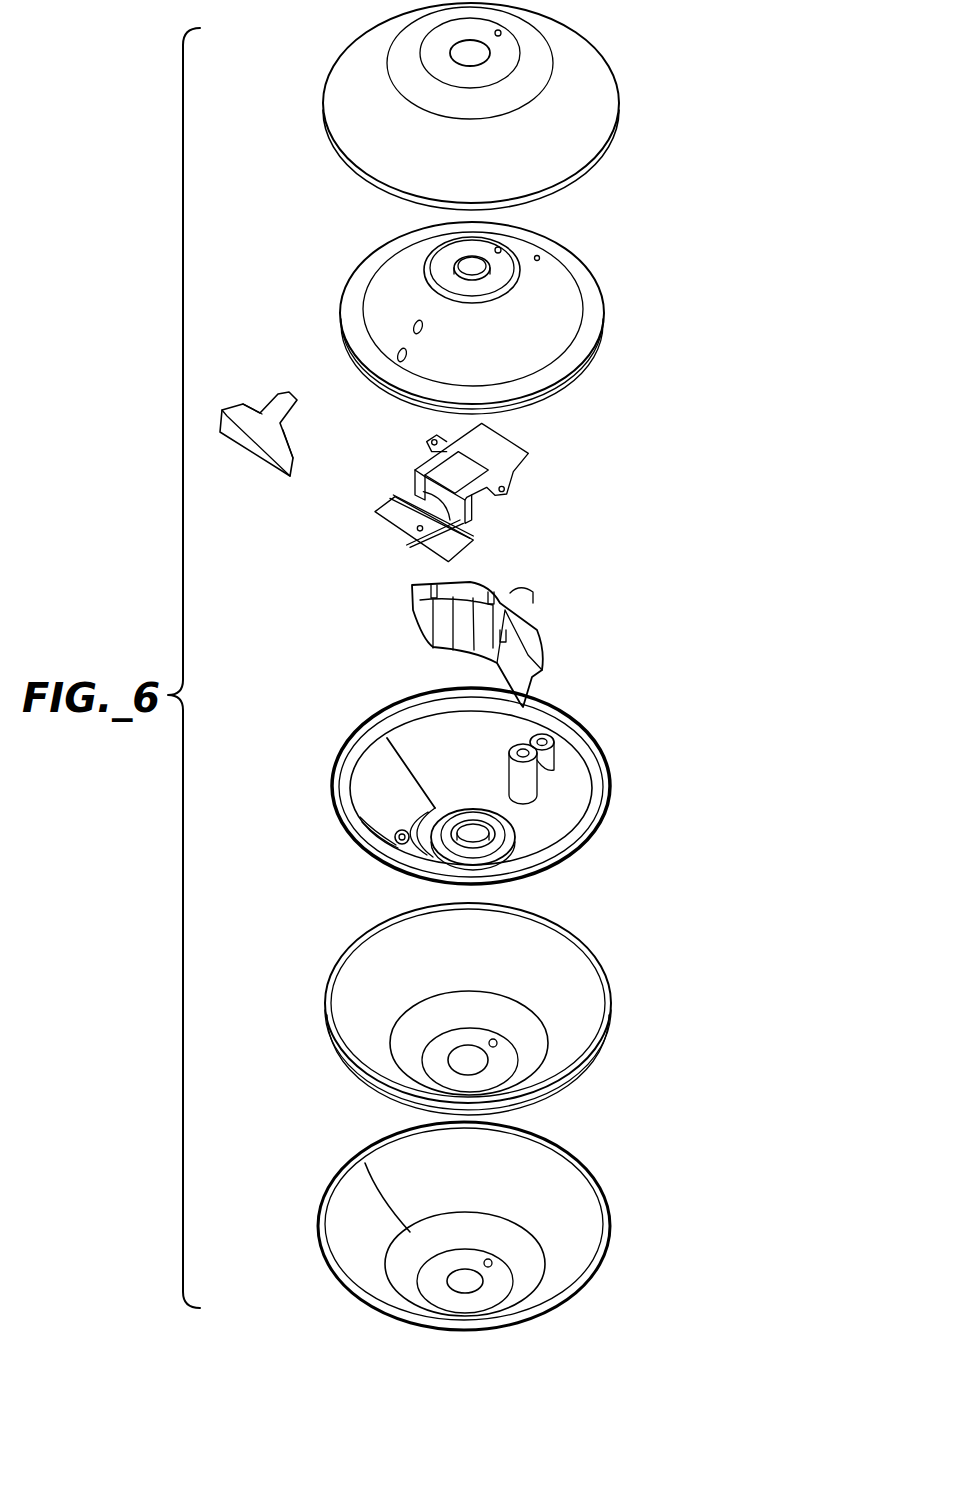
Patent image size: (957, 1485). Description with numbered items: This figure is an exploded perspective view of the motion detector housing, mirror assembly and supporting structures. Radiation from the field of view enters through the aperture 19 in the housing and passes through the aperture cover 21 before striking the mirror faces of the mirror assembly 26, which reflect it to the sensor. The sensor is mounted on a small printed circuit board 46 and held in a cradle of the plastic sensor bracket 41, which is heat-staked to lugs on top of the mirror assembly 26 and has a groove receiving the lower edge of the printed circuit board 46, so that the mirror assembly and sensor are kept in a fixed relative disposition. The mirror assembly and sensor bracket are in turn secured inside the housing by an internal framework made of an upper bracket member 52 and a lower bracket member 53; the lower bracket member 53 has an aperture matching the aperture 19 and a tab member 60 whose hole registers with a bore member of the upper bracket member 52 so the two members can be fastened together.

The upper bracket member 52 is at (585, 292).
The sensor bracket 41 is at (508, 455).
The printed circuit board 46 is at (257, 440).
The mirror assembly 26 is at (528, 640).
The lower bracket member 53 is at (612, 772).
The tab member 60 is at (372, 816).
The aperture cover 21 is at (612, 992).
The aperture 19 is at (340, 1222).